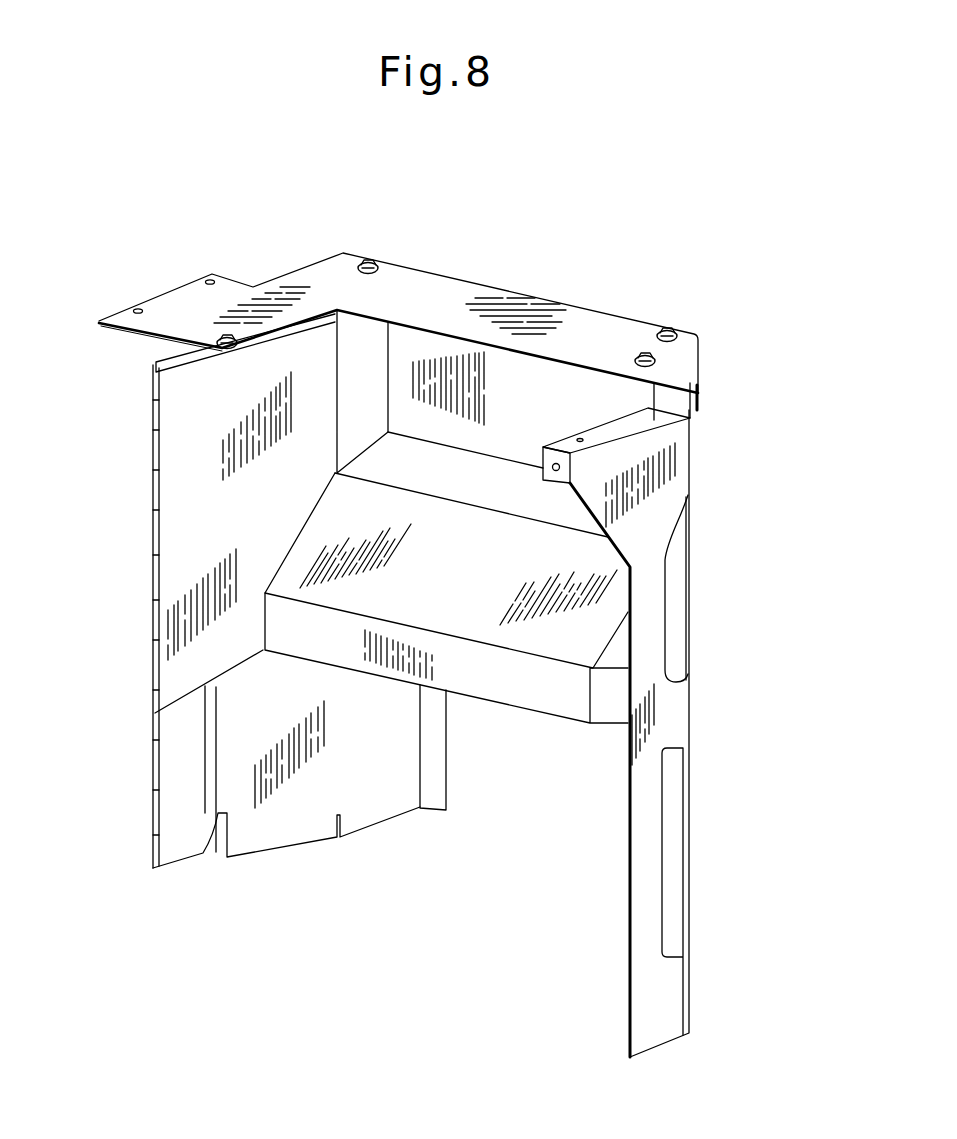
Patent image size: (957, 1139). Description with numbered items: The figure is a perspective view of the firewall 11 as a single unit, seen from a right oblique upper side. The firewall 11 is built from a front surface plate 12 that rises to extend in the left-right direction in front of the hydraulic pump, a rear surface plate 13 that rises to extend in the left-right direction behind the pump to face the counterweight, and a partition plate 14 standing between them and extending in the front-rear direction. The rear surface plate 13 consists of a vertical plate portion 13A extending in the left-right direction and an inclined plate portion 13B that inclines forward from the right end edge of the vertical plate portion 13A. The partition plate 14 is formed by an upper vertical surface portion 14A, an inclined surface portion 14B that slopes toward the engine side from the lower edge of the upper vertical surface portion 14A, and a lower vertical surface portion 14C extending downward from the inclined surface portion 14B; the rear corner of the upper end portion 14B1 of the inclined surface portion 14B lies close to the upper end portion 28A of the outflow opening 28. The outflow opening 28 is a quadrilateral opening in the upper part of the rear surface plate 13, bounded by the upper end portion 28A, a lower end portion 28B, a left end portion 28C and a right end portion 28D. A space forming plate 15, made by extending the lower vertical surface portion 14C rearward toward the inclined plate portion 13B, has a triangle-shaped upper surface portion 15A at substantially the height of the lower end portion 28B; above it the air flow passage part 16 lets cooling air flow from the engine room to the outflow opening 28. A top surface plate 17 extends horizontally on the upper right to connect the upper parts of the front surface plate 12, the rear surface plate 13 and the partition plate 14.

The firewall 11 is at (461, 278).
The front surface plate 12 is at (187, 540).
The rear surface plate 13 is at (640, 833).
The vertical plate portion 13A is at (637, 884).
The inclined plate portion 13B is at (698, 393).
The partition plate 14 is at (416, 545).
The upper vertical surface portion 14A is at (503, 370).
The inclined surface portion 14B is at (463, 542).
The upper end portion 14B1 is at (522, 460).
The lower vertical surface portion 14C is at (512, 677).
The space forming plate 15 is at (678, 660).
The upper surface portion 15A is at (673, 652).
The air flow passage part 16 is at (683, 586).
The top surface plate 17 is at (323, 275).
The outflow opening 28 is at (675, 543).
The upper end portion 28A is at (688, 523).
The lower end portion 28B is at (687, 674).
The left end portion 28C is at (667, 620).
The right end portion 28D is at (690, 557).